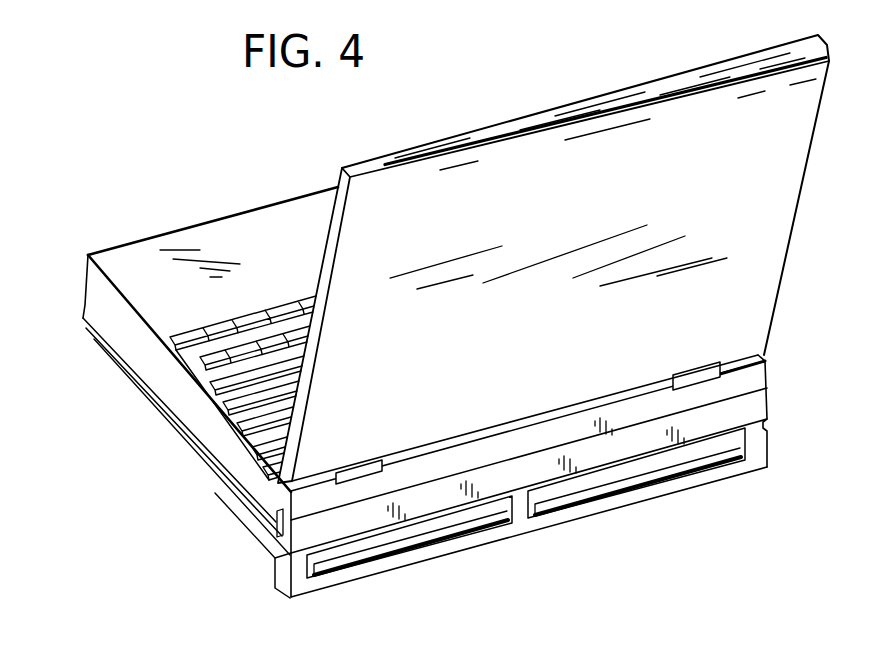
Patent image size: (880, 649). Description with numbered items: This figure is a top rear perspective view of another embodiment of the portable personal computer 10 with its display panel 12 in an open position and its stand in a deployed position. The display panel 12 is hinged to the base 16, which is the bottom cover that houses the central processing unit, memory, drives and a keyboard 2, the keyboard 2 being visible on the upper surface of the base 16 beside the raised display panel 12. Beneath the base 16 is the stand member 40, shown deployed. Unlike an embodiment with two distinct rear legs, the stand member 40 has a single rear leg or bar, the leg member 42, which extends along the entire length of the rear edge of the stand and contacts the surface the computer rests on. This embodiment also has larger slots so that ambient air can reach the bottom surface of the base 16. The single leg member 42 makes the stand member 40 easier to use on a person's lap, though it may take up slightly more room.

The portable personal computer 10 is at (147, 201).
The display panel 12 is at (781, 262).
The base 16 is at (86, 288).
The keyboard 2 is at (249, 305).
The stand member 40 is at (187, 456).
The leg member 42 is at (452, 544).